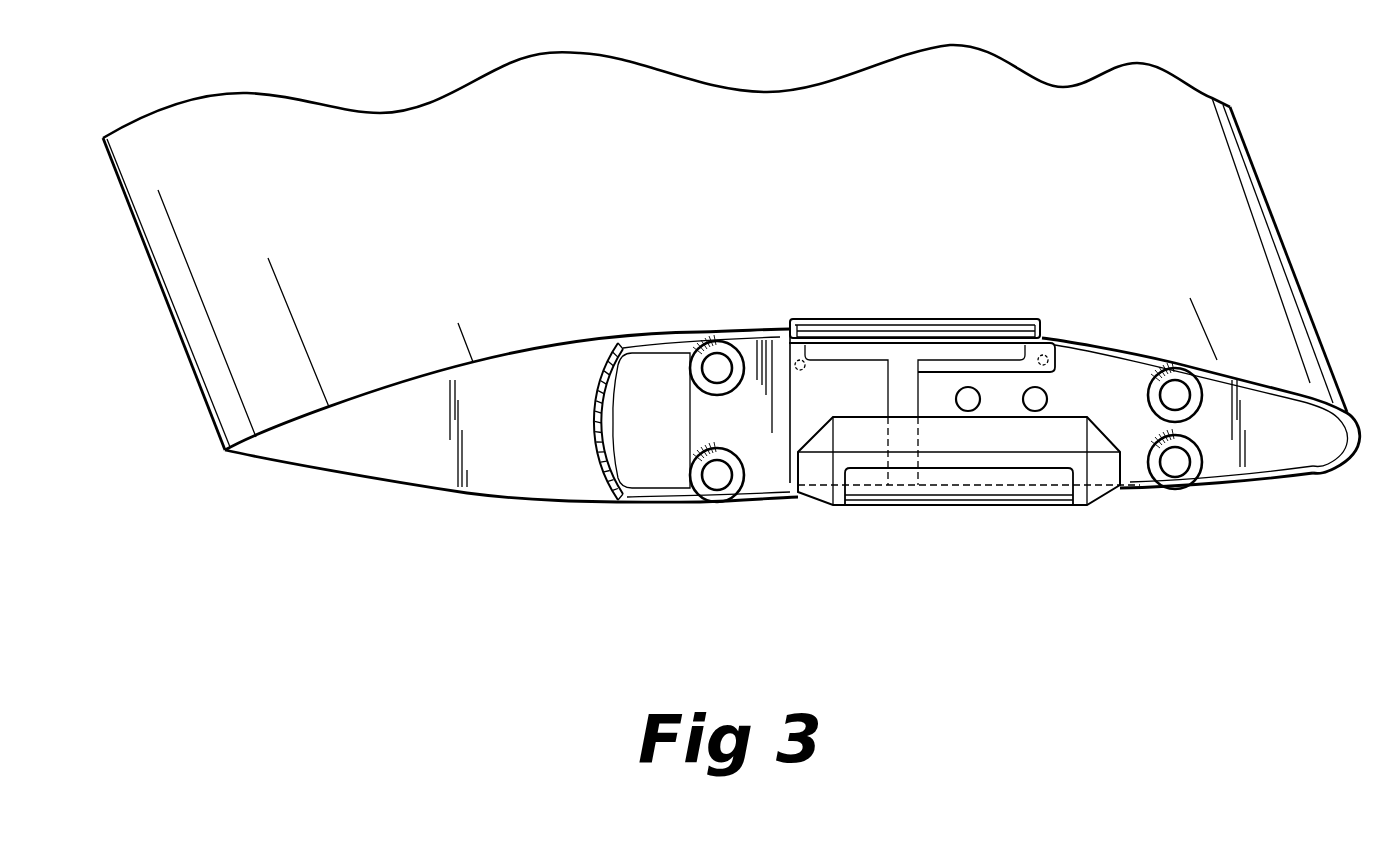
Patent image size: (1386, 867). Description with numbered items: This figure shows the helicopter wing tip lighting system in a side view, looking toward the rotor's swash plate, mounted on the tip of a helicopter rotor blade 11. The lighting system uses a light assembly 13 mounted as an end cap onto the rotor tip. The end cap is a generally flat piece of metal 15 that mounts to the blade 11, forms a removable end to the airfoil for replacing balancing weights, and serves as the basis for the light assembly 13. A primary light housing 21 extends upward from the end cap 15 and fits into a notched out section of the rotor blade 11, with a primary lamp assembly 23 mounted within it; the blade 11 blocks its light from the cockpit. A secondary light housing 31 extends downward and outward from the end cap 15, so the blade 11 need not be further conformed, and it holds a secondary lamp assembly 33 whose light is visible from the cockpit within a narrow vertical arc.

The rotor blade 11 is at (997, 199).
The light assembly 13 is at (1243, 490).
The end cap 15 is at (1287, 450).
The primary light housing 21 is at (822, 318).
The primary lamp assembly 23 is at (1042, 340).
The secondary light housing 31 is at (817, 505).
The secondary lamp assembly 33 is at (1033, 495).